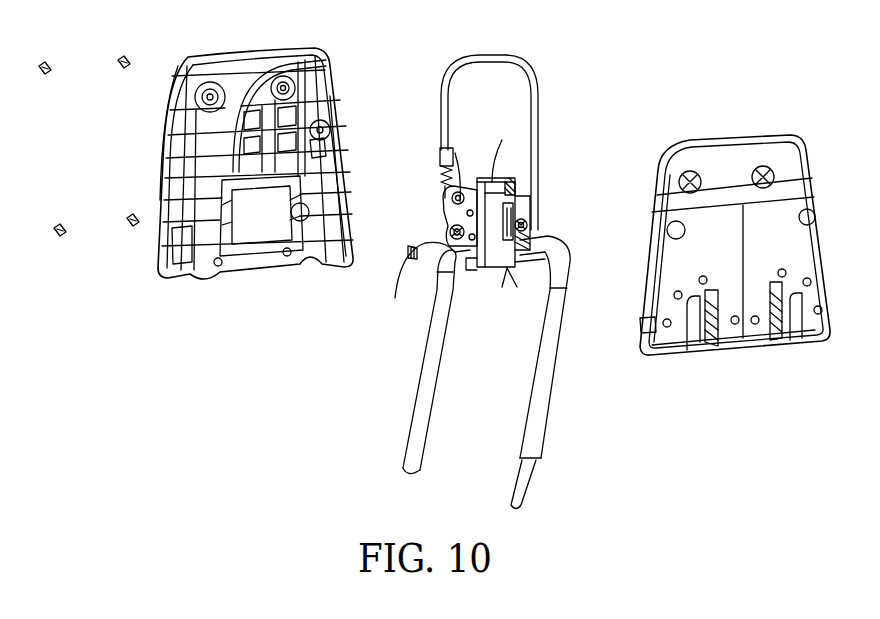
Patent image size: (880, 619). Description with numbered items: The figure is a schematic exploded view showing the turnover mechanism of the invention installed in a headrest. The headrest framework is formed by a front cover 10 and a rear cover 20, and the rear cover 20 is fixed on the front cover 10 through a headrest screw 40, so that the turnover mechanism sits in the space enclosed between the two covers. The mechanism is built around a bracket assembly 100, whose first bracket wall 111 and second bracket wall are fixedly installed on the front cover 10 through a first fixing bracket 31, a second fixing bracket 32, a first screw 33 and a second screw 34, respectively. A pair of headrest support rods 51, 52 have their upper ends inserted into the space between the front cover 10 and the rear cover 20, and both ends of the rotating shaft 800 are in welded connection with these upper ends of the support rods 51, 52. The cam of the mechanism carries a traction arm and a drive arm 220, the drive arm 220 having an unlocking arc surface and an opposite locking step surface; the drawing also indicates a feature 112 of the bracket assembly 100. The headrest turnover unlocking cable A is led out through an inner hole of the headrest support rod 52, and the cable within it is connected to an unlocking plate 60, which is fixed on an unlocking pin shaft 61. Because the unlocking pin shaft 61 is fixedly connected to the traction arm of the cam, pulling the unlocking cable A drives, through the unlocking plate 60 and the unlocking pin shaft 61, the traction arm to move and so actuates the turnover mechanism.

The front cover 10 is at (255, 55).
The rear cover 20 is at (742, 140).
The headrest screw 40 is at (122, 60).
The headrest turnover unlocking cable A is at (467, 72).
The unlocking plate 60 is at (447, 143).
The unlocking pin shaft 61 is at (495, 185).
The drive arm 220 is at (510, 185).
The recess 112 is at (512, 208).
The second fixing bracket 32 is at (530, 214).
The second screw 34 is at (532, 226).
The first fixing bracket 31 is at (452, 222).
The first screw 33 is at (448, 232).
The bracket assembly 100 is at (508, 275).
The first bracket wall 111 is at (468, 270).
The rotating shaft 800 is at (418, 262).
The headrest support rod 51 is at (428, 396).
The headrest support rod 52 is at (541, 412).